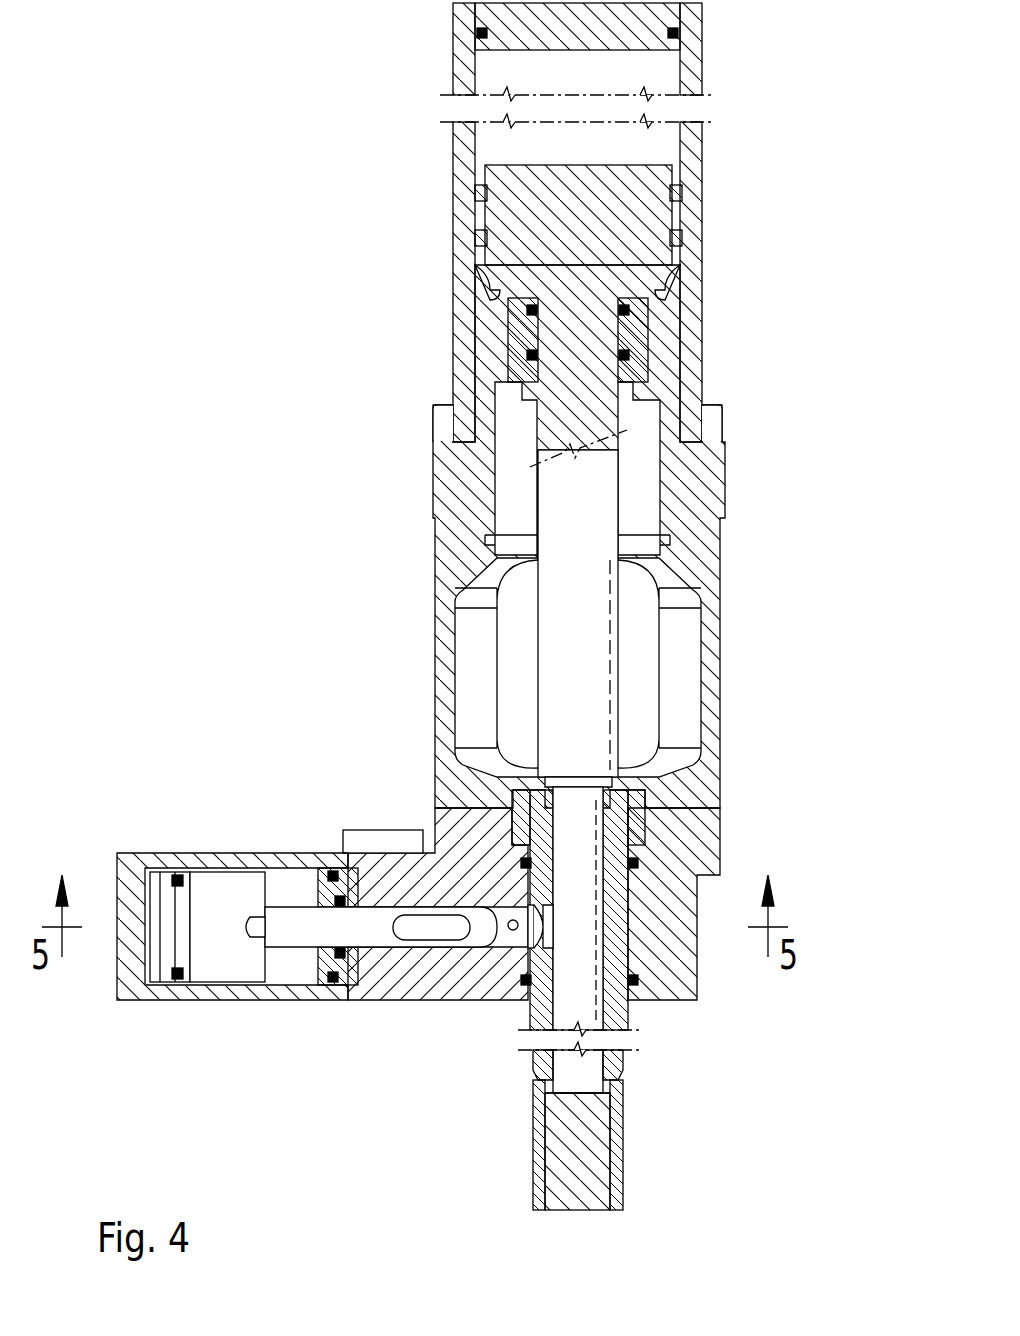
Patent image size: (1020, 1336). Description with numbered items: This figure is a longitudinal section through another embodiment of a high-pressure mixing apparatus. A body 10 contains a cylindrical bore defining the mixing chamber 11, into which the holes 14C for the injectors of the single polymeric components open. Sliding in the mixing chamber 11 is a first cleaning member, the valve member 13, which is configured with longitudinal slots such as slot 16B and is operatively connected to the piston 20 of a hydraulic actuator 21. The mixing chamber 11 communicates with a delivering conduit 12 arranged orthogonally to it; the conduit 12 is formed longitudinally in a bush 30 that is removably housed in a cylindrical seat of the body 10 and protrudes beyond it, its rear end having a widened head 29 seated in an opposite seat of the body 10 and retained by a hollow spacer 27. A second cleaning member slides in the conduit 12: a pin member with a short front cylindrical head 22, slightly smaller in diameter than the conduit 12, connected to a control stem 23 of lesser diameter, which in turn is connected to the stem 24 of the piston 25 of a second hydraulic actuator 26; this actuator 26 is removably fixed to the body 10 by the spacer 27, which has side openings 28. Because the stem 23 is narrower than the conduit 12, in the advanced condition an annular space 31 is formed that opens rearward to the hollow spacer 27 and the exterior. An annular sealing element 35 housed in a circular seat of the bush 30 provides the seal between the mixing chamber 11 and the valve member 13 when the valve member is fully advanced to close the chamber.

The body 10 is at (690, 857).
The mixing chamber 11 is at (520, 937).
The delivering conduit 12 is at (620, 1000).
The valve member 13 is at (370, 930).
The holes for the injectors 14C is at (511, 935).
The longitudinal slot 16B is at (433, 923).
The piston 20 is at (215, 887).
The hydraulic actuator 21 is at (225, 993).
The front cylindrical head 22 is at (590, 1185).
The control stem 23 is at (590, 933).
The stem 24 is at (585, 533).
The piston 25 is at (640, 215).
The second hydraulic actuator 26 is at (690, 150).
The hollow spacer 27 is at (445, 650).
The side openings 28 is at (643, 628).
The widened head 29 is at (632, 818).
The bush 30 is at (637, 1022).
The annular space 31 is at (607, 897).
The annular sealing element 35 is at (548, 927).